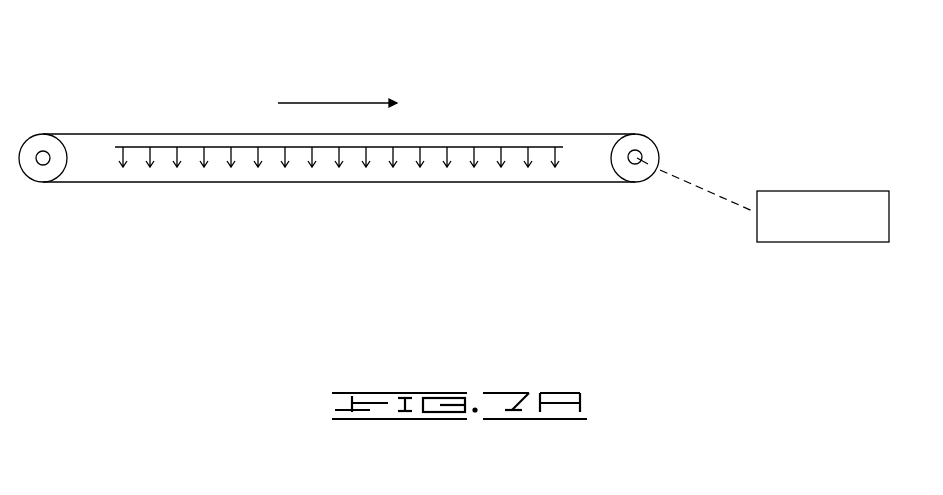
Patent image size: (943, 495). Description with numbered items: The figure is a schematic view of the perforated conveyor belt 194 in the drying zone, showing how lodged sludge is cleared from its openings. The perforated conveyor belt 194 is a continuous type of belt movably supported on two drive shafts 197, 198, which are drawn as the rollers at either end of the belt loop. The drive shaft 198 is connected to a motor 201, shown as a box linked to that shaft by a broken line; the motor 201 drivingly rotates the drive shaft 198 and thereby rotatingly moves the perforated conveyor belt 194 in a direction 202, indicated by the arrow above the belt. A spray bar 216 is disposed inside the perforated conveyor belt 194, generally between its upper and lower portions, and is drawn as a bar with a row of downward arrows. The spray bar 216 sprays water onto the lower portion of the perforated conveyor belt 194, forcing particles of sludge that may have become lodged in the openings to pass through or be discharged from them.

The perforated conveyor belt 194 is at (570, 133).
The drive shaft 197 is at (48, 161).
The drive shaft 198 is at (638, 158).
The motor 201 is at (788, 191).
The direction 202 is at (330, 103).
The spray bar 216 is at (459, 140).